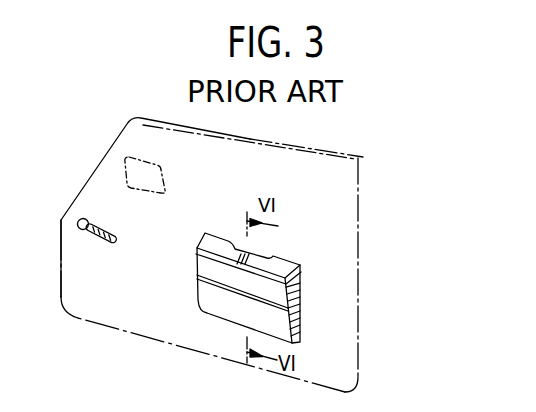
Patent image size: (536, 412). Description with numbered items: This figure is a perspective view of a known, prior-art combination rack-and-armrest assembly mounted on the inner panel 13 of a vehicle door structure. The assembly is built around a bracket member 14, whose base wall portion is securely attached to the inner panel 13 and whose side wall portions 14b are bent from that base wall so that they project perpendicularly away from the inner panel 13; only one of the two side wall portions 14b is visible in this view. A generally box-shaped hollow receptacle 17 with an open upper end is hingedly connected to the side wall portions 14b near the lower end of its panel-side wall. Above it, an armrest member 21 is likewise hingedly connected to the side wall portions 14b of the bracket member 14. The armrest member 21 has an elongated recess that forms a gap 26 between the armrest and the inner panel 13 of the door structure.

The inner panel 13 is at (350, 204).
The bracket member 14 is at (253, 288).
The side wall portions 14b is at (302, 287).
The receptacle 17 is at (212, 305).
The armrest member 21 is at (203, 235).
The gap 26 is at (263, 253).